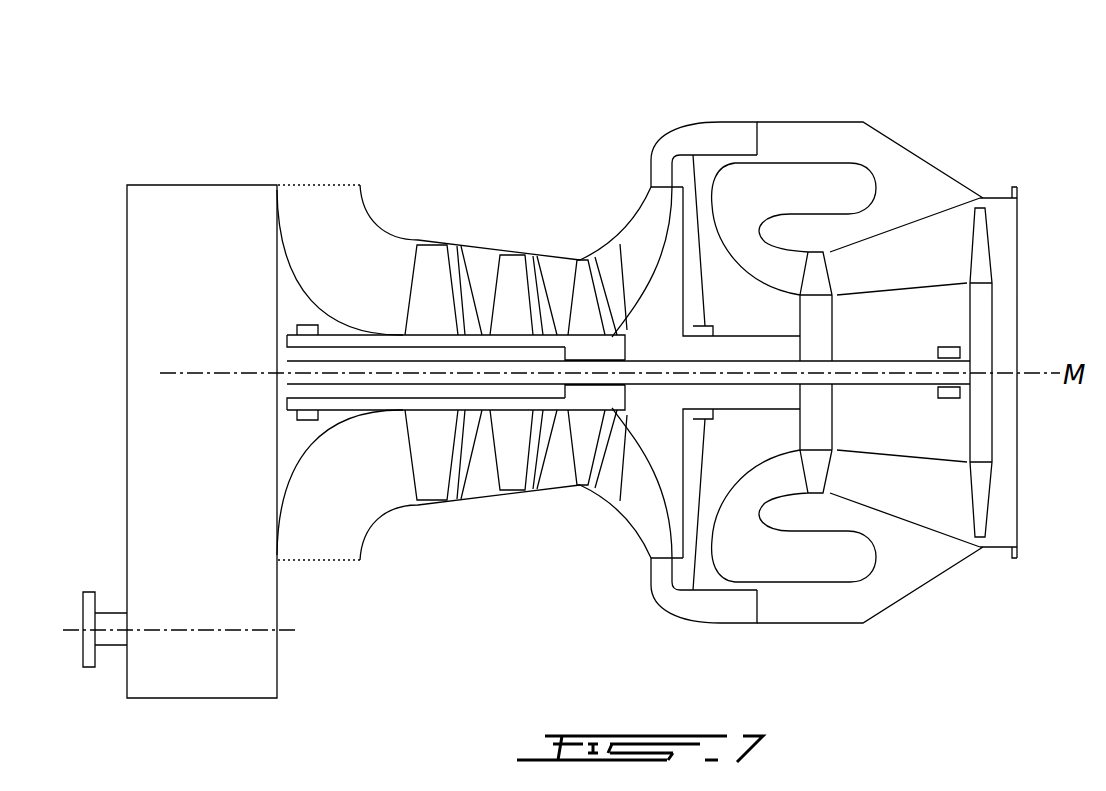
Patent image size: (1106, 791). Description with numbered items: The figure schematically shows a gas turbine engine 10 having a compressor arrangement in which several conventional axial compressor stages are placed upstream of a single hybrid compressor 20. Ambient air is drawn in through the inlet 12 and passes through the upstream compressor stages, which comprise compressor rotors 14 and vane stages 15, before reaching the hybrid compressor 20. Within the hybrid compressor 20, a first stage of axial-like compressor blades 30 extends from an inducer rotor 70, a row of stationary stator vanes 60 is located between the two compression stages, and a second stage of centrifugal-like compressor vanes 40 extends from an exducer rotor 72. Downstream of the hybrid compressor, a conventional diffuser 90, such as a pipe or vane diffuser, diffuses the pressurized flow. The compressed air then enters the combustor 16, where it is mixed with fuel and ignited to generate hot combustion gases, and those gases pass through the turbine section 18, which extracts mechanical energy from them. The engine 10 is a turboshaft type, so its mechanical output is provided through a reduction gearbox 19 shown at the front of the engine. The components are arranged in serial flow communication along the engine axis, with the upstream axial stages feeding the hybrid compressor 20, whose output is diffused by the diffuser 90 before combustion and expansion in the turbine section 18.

The gas turbine engine 10 is at (960, 102).
The inlet 12 is at (335, 220).
The compressor rotors 14 is at (440, 305).
The vane stages 15 is at (543, 250).
The combustor 16 is at (813, 203).
The turbine section 18 is at (913, 270).
The reduction gearbox 19 is at (218, 475).
The hybrid compressor 20 is at (672, 153).
The axial-like compressor blades 30 is at (595, 323).
The centrifugal-like compressor vanes 40 is at (660, 248).
The stationary stator vanes 60 is at (607, 242).
The inducer rotor 70 is at (592, 350).
The exducer rotor 72 is at (668, 347).
The diffuser 90 is at (736, 150).